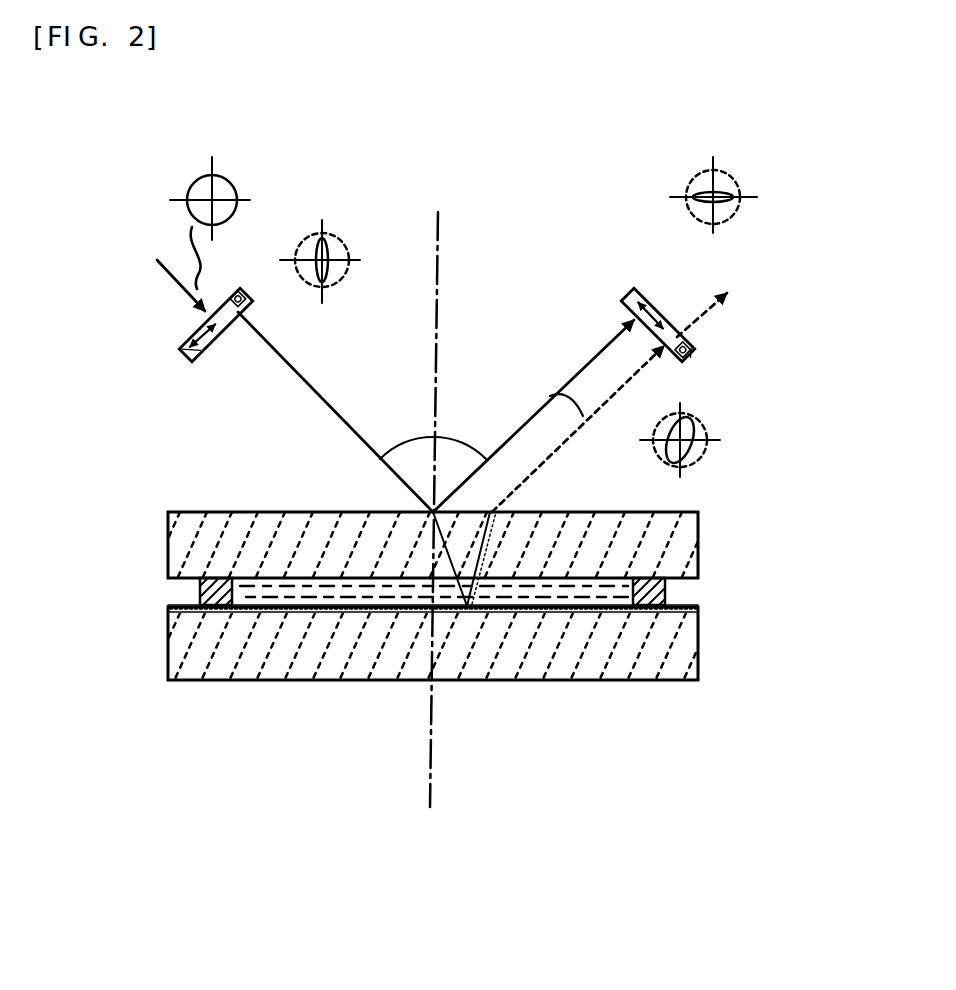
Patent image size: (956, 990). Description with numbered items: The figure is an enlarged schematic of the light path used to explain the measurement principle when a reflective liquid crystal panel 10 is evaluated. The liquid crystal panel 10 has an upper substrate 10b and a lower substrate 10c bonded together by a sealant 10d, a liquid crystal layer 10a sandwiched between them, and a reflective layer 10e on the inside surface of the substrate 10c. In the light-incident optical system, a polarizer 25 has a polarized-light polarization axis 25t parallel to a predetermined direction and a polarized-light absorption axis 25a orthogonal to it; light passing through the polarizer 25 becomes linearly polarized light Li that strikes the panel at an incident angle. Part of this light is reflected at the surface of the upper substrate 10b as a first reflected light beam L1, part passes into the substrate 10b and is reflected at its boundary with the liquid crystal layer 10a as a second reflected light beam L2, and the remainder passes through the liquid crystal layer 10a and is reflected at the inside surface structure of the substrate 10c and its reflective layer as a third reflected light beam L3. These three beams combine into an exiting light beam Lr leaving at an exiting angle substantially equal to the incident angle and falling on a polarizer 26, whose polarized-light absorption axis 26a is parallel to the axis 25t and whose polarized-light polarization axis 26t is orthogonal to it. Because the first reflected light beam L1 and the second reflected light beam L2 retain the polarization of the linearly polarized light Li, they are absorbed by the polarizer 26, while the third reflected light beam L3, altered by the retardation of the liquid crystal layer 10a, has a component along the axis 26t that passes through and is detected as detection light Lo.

The liquid crystal panel 10 is at (450, 627).
The liquid crystal layer 10a is at (262, 597).
The substrate 10b is at (697, 543).
The substrate 10c is at (613, 667).
The sealant 10d is at (665, 588).
The reflective layer 10e is at (353, 613).
The polarizer 25 is at (178, 350).
The polarized-light absorption axis 25a is at (240, 296).
The polarized-light polarization axis 25t is at (193, 360).
The polarizer 26 is at (632, 290).
The polarized-light absorption axis 26a is at (648, 294).
The polarized-light polarization axis 26t is at (690, 358).
The linearly polarized light Li is at (290, 367).
The detection light Lo is at (700, 317).
The exiting light beam Lr is at (550, 396).
The first reflected light beam L1 is at (585, 363).
The second reflected light beam L2 is at (560, 447).
The third reflected light beam L3 is at (637, 390).